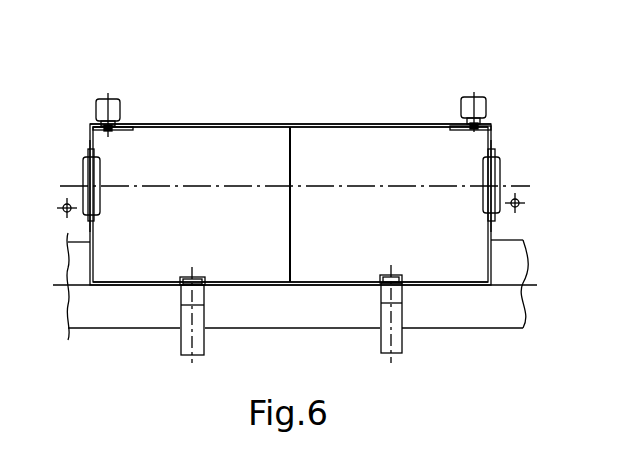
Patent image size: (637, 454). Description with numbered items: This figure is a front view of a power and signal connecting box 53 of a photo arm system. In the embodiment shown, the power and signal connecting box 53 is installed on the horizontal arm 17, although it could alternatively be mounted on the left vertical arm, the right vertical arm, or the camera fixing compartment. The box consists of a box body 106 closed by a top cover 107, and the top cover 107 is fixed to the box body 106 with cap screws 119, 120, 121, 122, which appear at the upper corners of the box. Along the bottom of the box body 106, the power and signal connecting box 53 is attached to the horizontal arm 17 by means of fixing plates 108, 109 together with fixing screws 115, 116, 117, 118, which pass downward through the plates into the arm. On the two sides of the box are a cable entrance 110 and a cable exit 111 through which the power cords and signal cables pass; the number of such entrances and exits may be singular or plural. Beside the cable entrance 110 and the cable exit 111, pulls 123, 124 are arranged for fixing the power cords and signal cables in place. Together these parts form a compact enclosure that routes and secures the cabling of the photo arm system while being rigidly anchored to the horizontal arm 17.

The power and signal connecting box 53 is at (251, 97).
The top cover 107 is at (302, 125).
The box body 106 is at (100, 287).
The horizontal arm 17 is at (507, 303).
The cap screw 120 is at (155, 97).
The cap screw 121 is at (110, 108).
The cap screw 119 is at (520, 93).
The cap screw 122 is at (480, 105).
The cable entrance 110 is at (85, 180).
The cable exit 111 is at (499, 177).
The pull 123 is at (63, 212).
The pull 124 is at (520, 203).
The fixing plate 108 is at (205, 340).
The fixing plate 109 is at (380, 338).
The fixing screw 115 is at (143, 326).
The fixing screw 116 is at (187, 281).
The fixing screw 118 is at (444, 324).
The fixing screw 117 is at (400, 285).